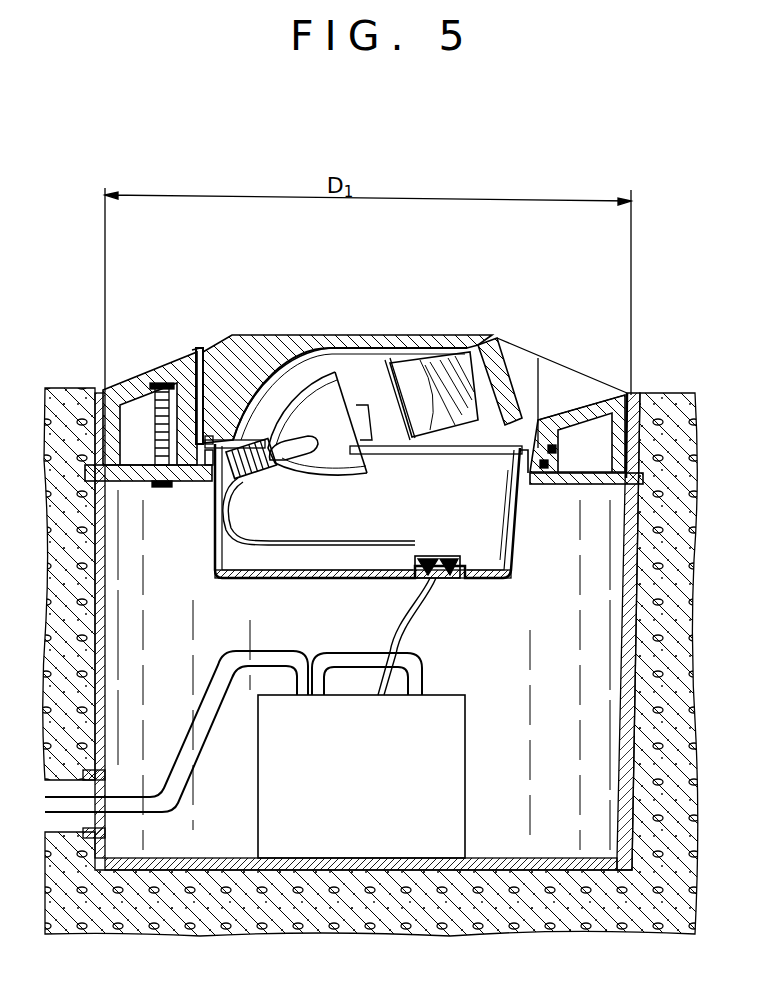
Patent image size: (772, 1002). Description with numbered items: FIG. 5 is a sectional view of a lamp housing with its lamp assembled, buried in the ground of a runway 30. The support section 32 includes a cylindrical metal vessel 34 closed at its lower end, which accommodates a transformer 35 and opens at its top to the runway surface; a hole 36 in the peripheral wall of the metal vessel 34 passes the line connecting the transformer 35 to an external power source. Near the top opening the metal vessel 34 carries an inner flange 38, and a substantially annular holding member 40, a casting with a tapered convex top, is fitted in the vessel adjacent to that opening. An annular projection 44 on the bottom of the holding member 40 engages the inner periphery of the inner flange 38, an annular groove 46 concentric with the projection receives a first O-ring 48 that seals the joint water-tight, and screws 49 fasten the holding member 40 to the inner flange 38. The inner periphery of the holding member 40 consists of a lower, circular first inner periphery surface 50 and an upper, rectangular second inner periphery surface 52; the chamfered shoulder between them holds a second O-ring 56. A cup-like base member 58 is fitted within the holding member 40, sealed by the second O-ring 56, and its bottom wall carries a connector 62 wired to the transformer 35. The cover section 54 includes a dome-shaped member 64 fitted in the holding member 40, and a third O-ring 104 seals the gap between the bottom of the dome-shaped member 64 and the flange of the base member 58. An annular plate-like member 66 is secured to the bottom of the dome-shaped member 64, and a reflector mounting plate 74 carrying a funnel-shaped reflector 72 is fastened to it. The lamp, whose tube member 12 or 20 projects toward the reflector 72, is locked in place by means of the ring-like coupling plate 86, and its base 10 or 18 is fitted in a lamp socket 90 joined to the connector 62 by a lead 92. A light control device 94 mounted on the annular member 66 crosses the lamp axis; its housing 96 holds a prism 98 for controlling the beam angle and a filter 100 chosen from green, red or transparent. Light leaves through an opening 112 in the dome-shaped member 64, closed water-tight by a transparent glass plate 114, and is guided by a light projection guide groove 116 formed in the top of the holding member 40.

The base 10 is at (352, 498).
The tube member 12 is at (330, 510).
The base 18 is at (350, 394).
The tube member 20 is at (360, 478).
The runway 30 is at (670, 406).
The support section 32 is at (152, 318).
The cylindrical metal vessel 34 is at (618, 797).
The transformer 35 is at (468, 727).
The hole 36 is at (108, 793).
The inner flange 38 is at (133, 483).
The holding member 40 is at (136, 385).
The annular projection 44 is at (205, 484).
The annular groove 46 is at (552, 466).
The first O-ring 48 is at (558, 486).
The screws 49 is at (160, 430).
The first inner periphery surface 50 is at (520, 488).
The second inner periphery surface 52 is at (196, 354).
The cover section 54 is at (415, 368).
The second O-ring 56 is at (558, 455).
The base member 58 is at (367, 530).
The connector 62 is at (445, 600).
The dome-shaped member 64 is at (343, 341).
The annular plate-like member 66 is at (490, 462).
The reflector 72 is at (330, 443).
The reflector mounting plate 74 is at (350, 422).
The ring-like coupling plate 86 is at (256, 478).
The lamp socket 90 is at (248, 500).
The lead 92 is at (350, 542).
The light control device 94 is at (358, 378).
The housing 96 is at (446, 454).
The prism 98 is at (455, 402).
The filter 100 is at (388, 403).
The third O-ring 104 is at (215, 438).
The opening 112 is at (500, 345).
The transparent glass plate 114 is at (515, 378).
The light projection guide groove 116 is at (593, 385).